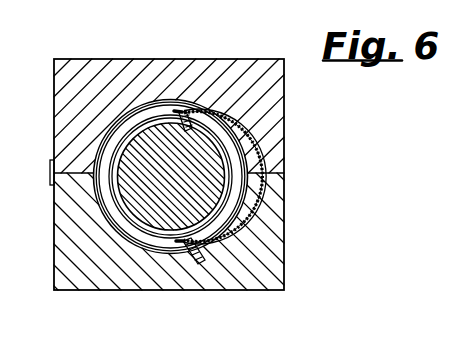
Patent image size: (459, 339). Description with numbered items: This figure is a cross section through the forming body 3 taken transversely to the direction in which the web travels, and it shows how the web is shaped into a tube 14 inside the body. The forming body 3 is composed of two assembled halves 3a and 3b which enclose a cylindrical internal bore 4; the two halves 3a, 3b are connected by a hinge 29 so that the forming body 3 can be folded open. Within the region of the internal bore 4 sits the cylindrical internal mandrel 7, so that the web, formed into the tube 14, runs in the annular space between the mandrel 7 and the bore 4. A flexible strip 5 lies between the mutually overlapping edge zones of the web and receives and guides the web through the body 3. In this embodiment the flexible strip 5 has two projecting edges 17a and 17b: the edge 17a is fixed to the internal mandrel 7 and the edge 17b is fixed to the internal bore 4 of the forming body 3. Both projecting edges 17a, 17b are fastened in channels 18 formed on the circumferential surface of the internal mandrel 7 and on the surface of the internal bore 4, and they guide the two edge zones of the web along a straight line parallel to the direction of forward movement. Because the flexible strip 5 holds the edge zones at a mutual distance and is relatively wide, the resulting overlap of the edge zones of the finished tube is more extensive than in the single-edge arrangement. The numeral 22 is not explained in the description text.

The forming body 3 is at (134, 57).
The body half 3a is at (270, 107).
The body half 3b is at (274, 253).
The internal bore 4 is at (239, 196).
The flexible strip 5 is at (112, 202).
The internal mandrel 7 is at (246, 175).
The tube 14 is at (211, 127).
The projecting edge 17a is at (190, 128).
The projecting edge 17b is at (203, 263).
The channel 18 is at (208, 160).
The winding layer 22 is at (180, 110).
The hinge 29 is at (50, 177).